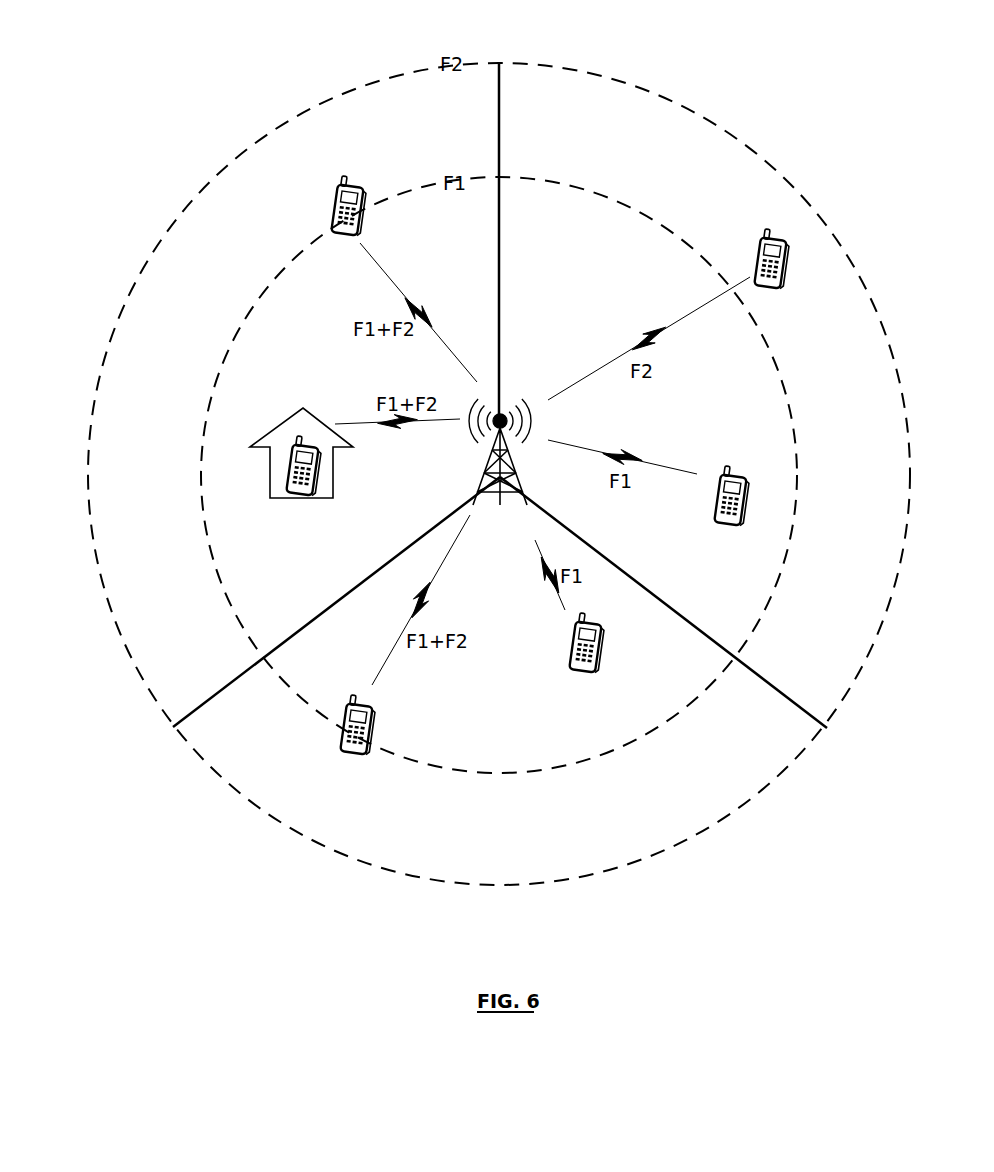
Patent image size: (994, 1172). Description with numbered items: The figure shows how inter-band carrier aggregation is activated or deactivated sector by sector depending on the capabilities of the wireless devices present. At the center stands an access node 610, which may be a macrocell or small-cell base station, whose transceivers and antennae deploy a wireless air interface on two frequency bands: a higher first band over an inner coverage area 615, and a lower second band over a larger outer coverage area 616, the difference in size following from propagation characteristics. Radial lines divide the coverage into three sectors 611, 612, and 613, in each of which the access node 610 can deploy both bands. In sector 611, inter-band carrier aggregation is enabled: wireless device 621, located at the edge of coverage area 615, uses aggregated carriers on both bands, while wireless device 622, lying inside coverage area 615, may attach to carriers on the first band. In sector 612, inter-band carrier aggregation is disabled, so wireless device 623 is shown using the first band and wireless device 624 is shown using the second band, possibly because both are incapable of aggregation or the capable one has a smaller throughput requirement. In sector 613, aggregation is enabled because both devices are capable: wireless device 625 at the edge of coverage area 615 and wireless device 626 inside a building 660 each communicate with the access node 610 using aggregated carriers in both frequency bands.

The access node 610 is at (487, 492).
The sector 611 is at (710, 810).
The sector 612 is at (672, 124).
The sector 613 is at (125, 375).
The coverage area 615 is at (430, 182).
The coverage area 616 is at (392, 78).
The wireless device 621 is at (340, 745).
The wireless device 622 is at (582, 663).
The wireless device 623 is at (745, 488).
The wireless device 624 is at (788, 270).
The wireless device 625 is at (333, 210).
The wireless device 626 is at (290, 476).
The building 660 is at (283, 425).